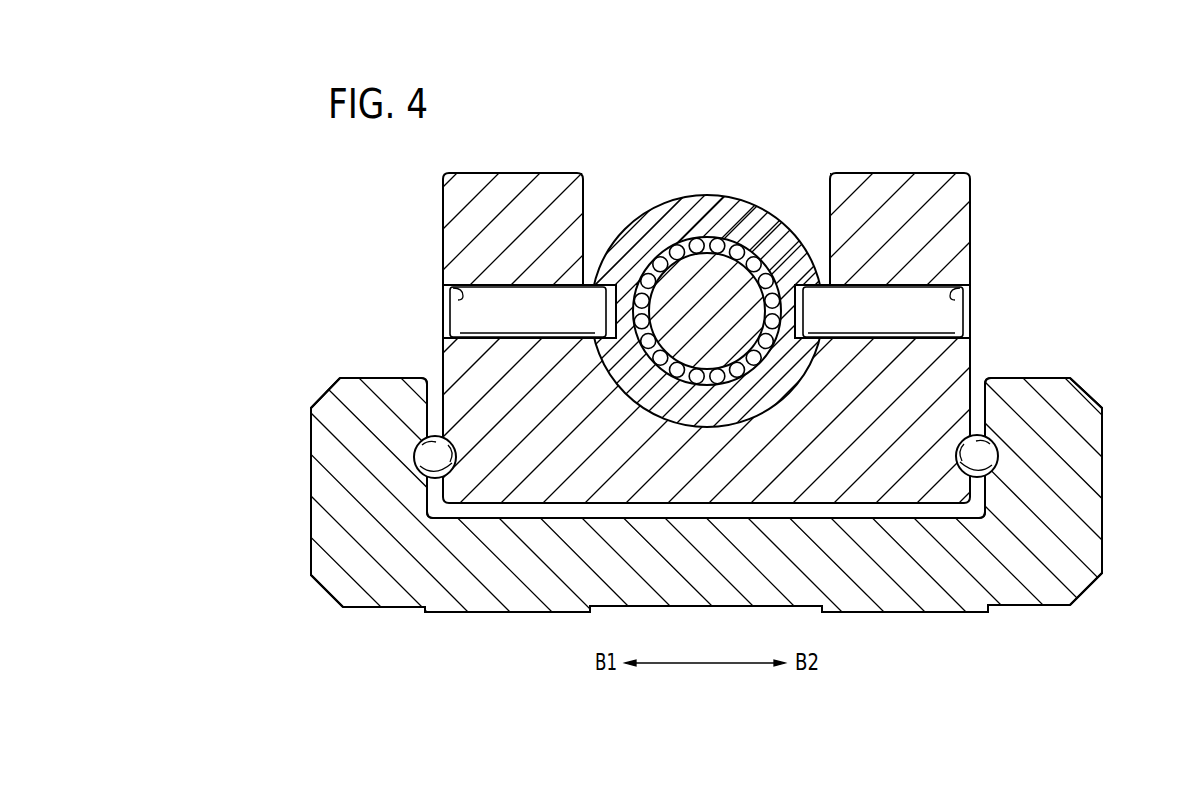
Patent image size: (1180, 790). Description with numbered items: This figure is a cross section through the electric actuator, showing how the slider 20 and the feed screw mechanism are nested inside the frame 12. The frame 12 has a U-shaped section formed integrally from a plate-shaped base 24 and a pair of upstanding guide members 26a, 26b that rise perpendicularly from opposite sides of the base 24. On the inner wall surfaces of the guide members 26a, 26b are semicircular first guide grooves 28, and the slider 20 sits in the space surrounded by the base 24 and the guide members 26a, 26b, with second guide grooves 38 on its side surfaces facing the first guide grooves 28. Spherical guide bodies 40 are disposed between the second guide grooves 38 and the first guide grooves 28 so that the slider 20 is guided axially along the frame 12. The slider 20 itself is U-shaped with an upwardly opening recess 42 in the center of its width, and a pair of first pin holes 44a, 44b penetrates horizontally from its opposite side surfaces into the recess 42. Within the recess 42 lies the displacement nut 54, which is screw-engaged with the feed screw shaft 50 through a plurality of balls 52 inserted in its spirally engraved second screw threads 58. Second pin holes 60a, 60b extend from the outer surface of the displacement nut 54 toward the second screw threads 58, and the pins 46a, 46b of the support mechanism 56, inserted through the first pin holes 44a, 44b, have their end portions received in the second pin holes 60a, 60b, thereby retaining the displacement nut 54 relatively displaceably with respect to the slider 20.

The frame 12 is at (1082, 363).
The slider 20 is at (926, 161).
The base 24 is at (465, 597).
The guide member 26a is at (1093, 470).
The guide member 26b is at (320, 470).
The first guide groove 28 is at (415, 455).
The second guide groove 38 is at (438, 478).
The guide body 40 is at (433, 440).
The recess 42 is at (585, 195).
The first pin hole 44a is at (967, 292).
The first pin hole 44b is at (458, 300).
The pin 46a is at (955, 315).
The pin 46b is at (458, 317).
The feed screw shaft 50 is at (703, 257).
The ball 52 is at (753, 260).
The displacement nut 54 is at (672, 185).
The support mechanism 56 is at (980, 262).
The second screw thread 58 is at (658, 283).
The second pin hole 60a is at (808, 290).
The second pin hole 60b is at (614, 304).